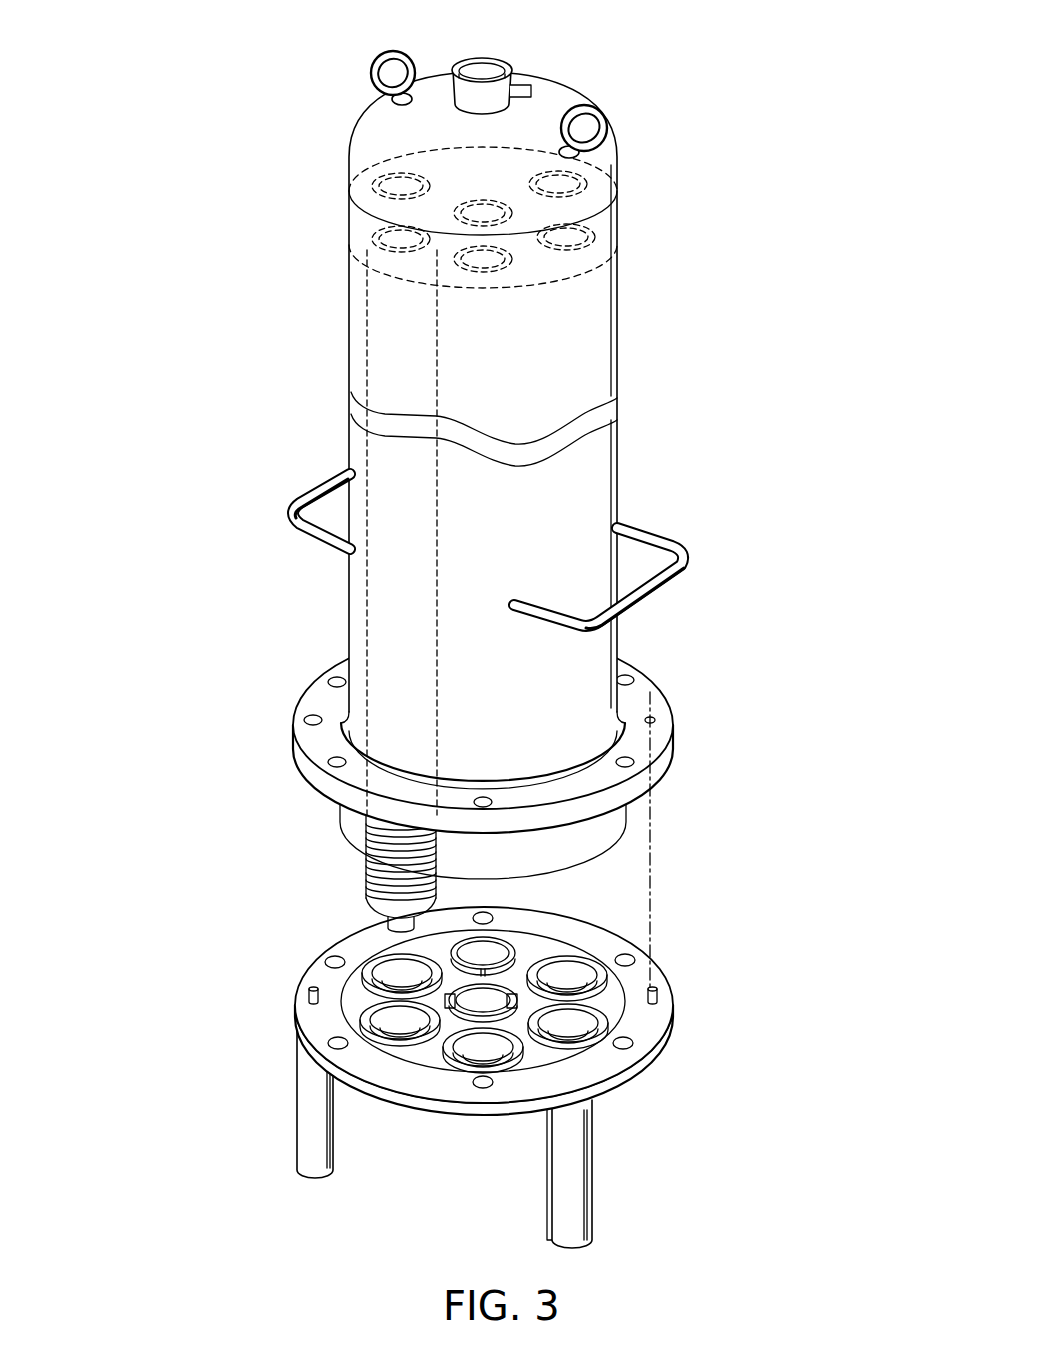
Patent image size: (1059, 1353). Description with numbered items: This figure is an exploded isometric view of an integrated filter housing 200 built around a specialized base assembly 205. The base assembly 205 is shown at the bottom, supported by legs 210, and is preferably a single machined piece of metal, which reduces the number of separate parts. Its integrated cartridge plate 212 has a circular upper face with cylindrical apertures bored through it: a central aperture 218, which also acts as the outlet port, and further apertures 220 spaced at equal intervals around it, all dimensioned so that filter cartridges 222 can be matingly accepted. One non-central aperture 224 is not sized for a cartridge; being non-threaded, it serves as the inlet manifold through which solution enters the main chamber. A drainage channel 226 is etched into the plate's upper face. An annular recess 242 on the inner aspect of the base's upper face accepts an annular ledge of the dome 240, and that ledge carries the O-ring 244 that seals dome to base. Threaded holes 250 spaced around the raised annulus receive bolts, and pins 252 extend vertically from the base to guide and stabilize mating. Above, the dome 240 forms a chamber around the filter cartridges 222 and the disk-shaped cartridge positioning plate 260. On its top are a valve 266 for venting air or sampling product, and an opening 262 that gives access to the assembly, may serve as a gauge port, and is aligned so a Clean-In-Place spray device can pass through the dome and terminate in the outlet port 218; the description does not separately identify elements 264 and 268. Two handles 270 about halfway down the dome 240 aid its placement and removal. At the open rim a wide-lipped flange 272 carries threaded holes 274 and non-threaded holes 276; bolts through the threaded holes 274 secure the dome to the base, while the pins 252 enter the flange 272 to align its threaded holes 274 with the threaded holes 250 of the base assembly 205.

The integrated filter housing 200 is at (770, 42).
The base assembly 205 is at (208, 991).
The legs 210 is at (557, 1233).
The integrated cartridge plate 212 is at (352, 982).
The central aperture 218 is at (528, 1038).
The apertures 220 is at (478, 1067).
The filter cartridges 222 is at (377, 880).
The inlet manifold aperture 224 is at (486, 951).
The drainage channel 226 is at (506, 946).
The dome 240 is at (617, 484).
The annular recess 242 is at (408, 942).
The O-ring 244 is at (342, 834).
The threaded holes 250 is at (483, 1089).
The pins 252 is at (307, 993).
The cartridge positioning plate 260 is at (361, 218).
The opening 262 is at (484, 72).
The ring fittings 264 is at (371, 66).
The valve 266 is at (519, 87).
The apertures 268 is at (489, 267).
The handles 270 is at (279, 517).
The wide-lipped flange 272 is at (650, 681).
The threaded holes 274 is at (648, 763).
The non-threaded holes 276 is at (659, 720).